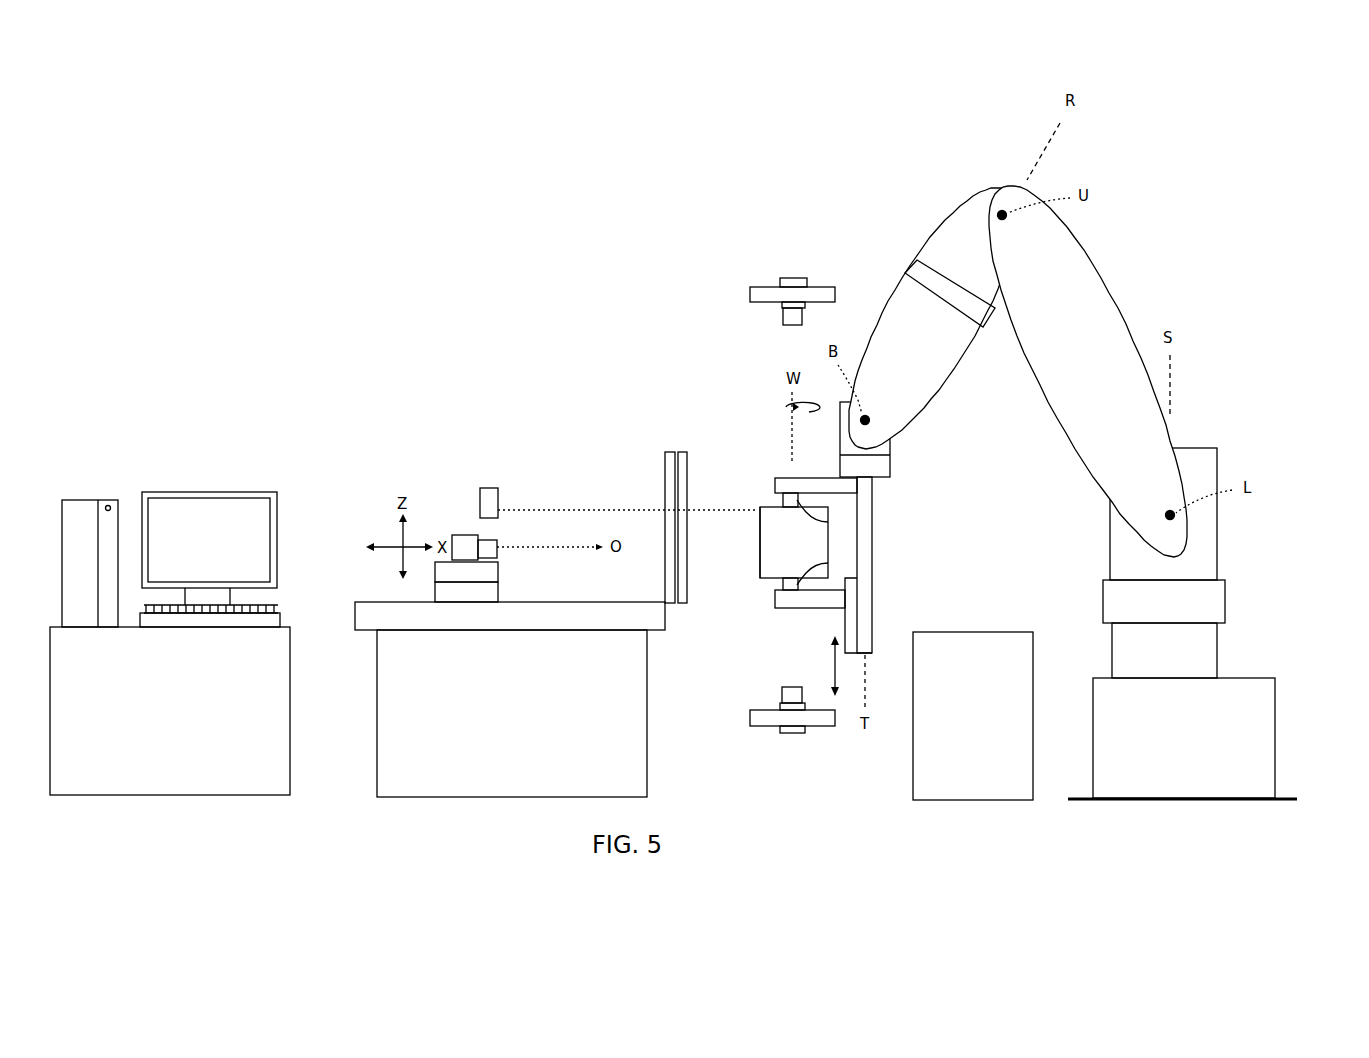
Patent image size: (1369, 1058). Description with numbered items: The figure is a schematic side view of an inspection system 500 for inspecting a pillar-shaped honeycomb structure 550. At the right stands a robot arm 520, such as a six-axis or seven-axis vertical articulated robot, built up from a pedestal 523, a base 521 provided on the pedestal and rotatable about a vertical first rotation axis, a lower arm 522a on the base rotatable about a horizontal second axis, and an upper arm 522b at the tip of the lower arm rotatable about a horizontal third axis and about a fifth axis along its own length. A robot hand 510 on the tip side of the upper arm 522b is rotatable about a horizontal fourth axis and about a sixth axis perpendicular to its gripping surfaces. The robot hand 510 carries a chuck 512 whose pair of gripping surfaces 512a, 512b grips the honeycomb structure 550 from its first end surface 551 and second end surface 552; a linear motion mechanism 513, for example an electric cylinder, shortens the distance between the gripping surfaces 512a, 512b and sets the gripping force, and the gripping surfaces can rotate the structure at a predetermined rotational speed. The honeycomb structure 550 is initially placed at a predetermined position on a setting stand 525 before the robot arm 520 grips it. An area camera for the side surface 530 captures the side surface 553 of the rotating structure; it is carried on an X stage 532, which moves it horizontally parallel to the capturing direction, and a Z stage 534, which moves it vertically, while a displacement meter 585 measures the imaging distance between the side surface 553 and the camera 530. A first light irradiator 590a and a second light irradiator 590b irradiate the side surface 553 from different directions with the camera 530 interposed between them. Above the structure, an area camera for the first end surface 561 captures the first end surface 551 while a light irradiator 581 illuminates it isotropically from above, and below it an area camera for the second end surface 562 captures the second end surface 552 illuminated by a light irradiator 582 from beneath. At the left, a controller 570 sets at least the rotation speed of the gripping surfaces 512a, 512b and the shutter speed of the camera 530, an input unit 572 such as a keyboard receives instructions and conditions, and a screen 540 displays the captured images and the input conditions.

The inspection system 500 is at (383, 366).
The robot hand 510 is at (900, 448).
The chuck 512 is at (836, 527).
The gripping surface 512a is at (828, 520).
The gripping surface 512b is at (828, 563).
The linear motion mechanism 513 is at (845, 615).
The robot arm 520 is at (1039, 368).
The base 521 is at (1220, 537).
The lower arm 522a is at (1113, 310).
The upper arm 522b is at (937, 240).
The pedestal 523 is at (1277, 715).
The setting stand 525 is at (985, 632).
The area camera for the side surface 530 is at (468, 535).
The X stage 532 is at (500, 595).
The Z stage 534 is at (500, 575).
The screen 540 is at (230, 515).
The pillar-shaped honeycomb structure 550 is at (838, 538).
The first end surface 551 is at (773, 505).
The second end surface 552 is at (770, 582).
The side surface 553 is at (760, 556).
The area camera for the first end surface 561 is at (795, 278).
The area camera for the second end surface 562 is at (792, 733).
The controller 570 is at (92, 500).
The input unit 572 is at (284, 613).
The light irradiator 581 is at (750, 287).
The light irradiator 582 is at (750, 712).
The displacement meter 585 is at (498, 502).
The first light irradiator 590a is at (661, 486).
The second light irradiator 590b is at (672, 452).